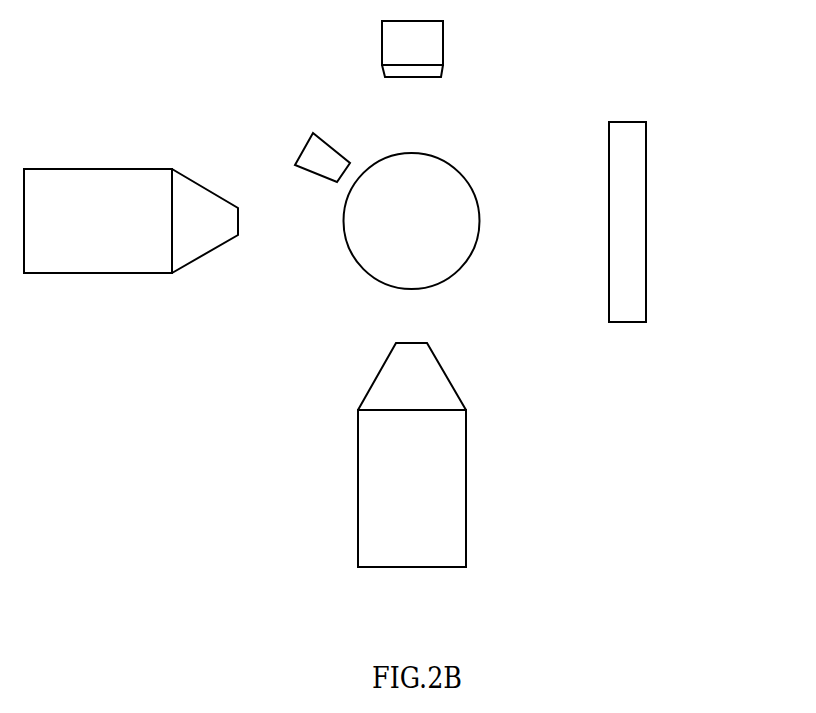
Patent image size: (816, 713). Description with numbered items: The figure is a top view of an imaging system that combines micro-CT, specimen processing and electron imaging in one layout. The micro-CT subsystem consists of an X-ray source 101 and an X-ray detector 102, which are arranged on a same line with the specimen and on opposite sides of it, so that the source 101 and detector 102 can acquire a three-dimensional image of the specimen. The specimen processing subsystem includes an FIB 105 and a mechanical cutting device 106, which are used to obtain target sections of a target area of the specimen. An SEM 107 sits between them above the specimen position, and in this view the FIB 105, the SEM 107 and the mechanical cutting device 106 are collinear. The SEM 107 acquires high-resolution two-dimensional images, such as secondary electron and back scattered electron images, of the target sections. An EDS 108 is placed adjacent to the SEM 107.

The X-ray source 101 is at (60, 157).
The X-ray detector 102 is at (650, 153).
The FIB subsystem 105 is at (462, 485).
The mechanical cutting device 106 is at (448, 42).
The SEM 107 is at (457, 170).
The EDS 108 is at (300, 100).